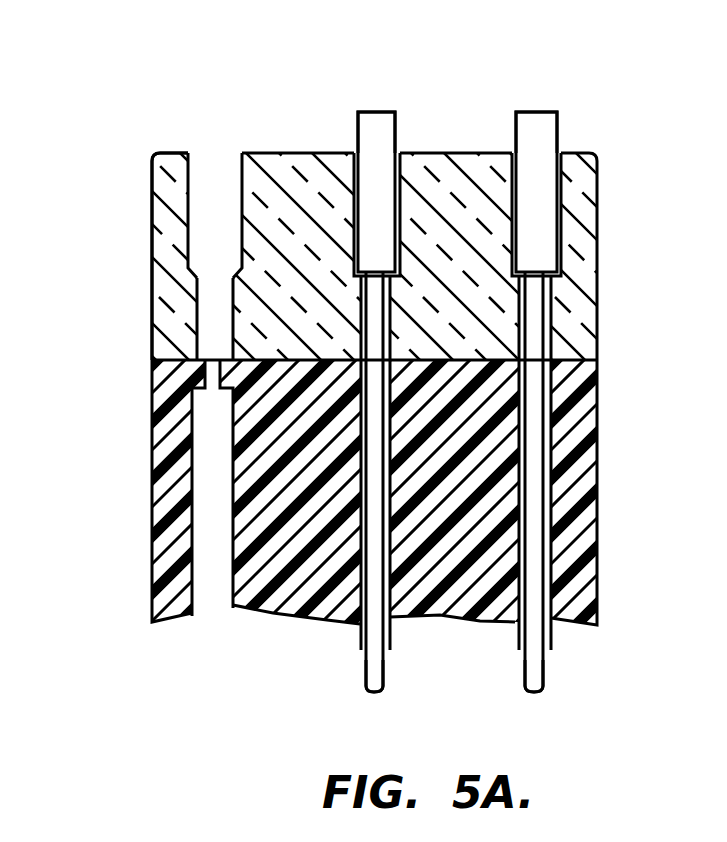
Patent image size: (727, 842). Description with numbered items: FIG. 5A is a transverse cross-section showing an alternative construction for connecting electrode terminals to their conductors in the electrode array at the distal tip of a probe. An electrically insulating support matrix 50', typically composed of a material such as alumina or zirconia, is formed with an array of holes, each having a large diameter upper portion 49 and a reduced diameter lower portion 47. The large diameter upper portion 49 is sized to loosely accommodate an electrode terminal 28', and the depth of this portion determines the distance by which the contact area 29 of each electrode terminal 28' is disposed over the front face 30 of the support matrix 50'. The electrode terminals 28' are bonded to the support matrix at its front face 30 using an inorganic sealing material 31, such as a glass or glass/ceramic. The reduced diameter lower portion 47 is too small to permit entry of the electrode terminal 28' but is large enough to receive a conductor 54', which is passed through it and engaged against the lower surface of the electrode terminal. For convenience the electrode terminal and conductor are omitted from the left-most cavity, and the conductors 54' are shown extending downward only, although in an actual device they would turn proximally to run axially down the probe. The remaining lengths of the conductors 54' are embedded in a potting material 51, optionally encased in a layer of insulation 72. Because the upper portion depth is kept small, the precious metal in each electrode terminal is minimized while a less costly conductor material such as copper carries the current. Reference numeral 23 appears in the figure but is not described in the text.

The pin shoulder / bore step 23 is at (403, 284).
The electrode terminal 28' is at (497, 395).
The contact area 29 is at (378, 112).
The front face 30 is at (306, 153).
The inorganic sealing material 31 is at (400, 217).
The reduced diameter lower portion 47 is at (207, 327).
The large diameter upper portion 49 is at (201, 153).
The electrically insulating support matrix 50' is at (109, 256).
The potting material 51 is at (152, 503).
The conductor 54' is at (498, 684).
The layer of insulation 72 is at (402, 522).